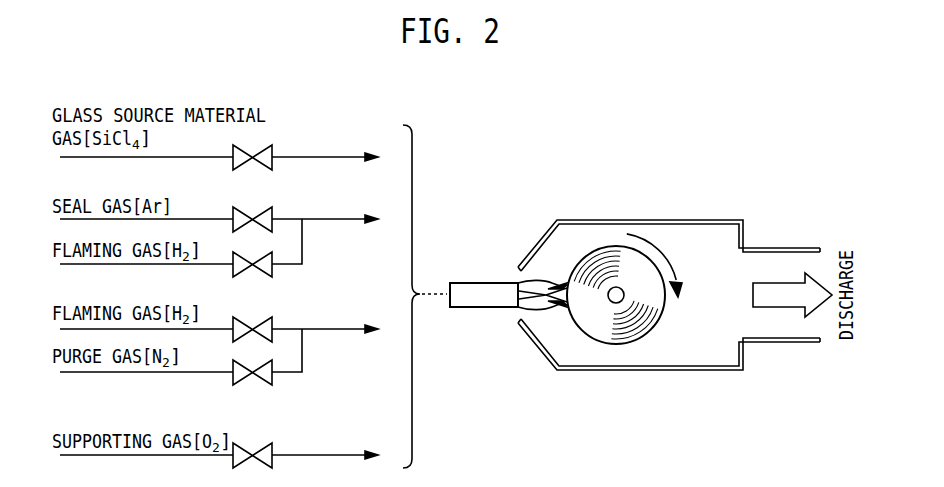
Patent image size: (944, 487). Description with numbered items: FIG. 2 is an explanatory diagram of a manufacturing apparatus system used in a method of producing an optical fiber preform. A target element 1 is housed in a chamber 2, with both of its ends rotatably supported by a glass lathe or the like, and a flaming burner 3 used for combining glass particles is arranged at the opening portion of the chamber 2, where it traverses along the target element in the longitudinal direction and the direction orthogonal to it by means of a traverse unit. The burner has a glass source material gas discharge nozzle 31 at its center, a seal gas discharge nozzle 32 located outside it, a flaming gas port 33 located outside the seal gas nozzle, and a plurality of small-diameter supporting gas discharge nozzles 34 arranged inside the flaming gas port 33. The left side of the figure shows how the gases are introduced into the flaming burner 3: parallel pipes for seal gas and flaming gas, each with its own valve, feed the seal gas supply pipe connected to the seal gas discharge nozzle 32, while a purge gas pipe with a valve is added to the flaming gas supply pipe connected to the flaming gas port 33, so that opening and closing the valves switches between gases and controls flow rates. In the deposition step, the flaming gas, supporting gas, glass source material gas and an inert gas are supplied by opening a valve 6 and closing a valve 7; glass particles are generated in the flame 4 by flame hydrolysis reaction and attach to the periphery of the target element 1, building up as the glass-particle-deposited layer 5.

The target element 1 is at (621, 299).
The chamber 2 is at (710, 221).
The flaming burner 3 is at (472, 290).
The flame 4 is at (543, 283).
The glass-particle-deposited layer 5 is at (620, 333).
The valve 6 is at (258, 213).
The valve 7 is at (258, 258).
The glass source material gas discharge nozzle 31 is at (325, 144).
The seal gas discharge nozzle 32 is at (325, 228).
The flaming gas port 33 is at (325, 336).
The supporting gas discharge nozzles 34 is at (325, 443).